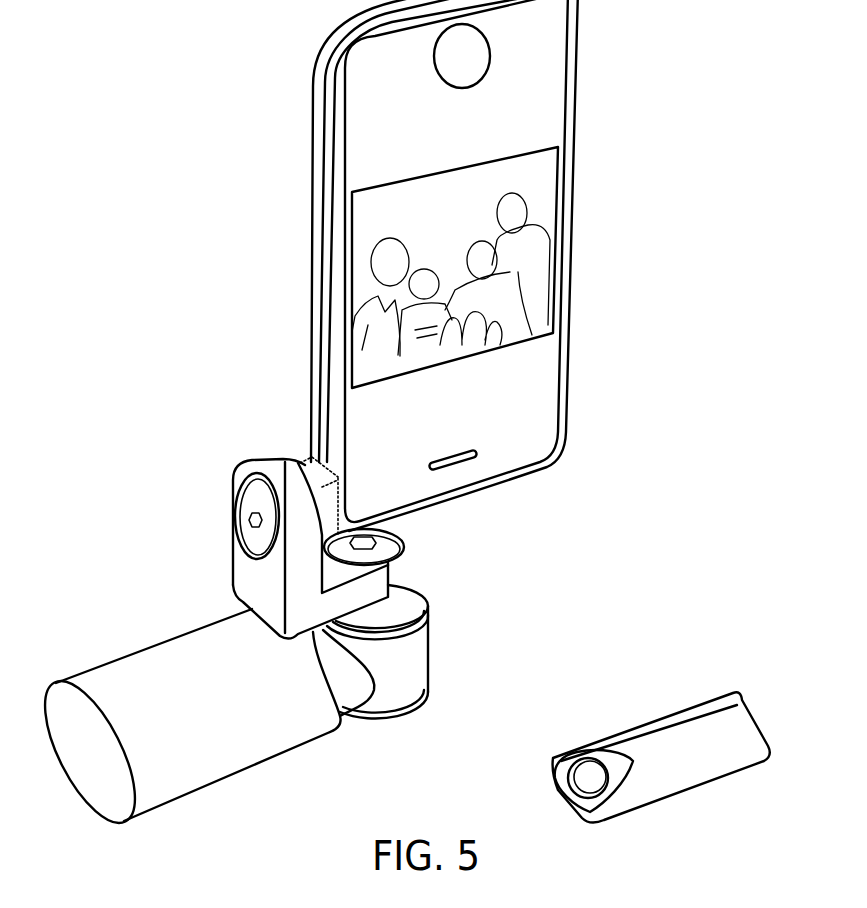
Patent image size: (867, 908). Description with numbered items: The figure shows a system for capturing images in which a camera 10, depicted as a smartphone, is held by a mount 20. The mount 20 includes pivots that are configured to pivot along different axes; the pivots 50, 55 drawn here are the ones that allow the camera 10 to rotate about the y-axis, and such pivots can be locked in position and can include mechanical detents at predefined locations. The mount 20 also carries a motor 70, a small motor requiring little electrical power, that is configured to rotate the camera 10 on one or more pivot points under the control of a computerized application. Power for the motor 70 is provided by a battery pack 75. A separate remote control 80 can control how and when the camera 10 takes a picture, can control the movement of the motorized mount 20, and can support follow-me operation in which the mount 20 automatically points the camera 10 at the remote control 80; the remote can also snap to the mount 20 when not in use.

The camera 10 is at (578, 72).
The mount 20 is at (404, 553).
The pivot 50 is at (249, 522).
The pivot 55 is at (376, 539).
The motor 70 is at (430, 630).
The battery pack 75 is at (220, 780).
The remote control 80 is at (664, 712).